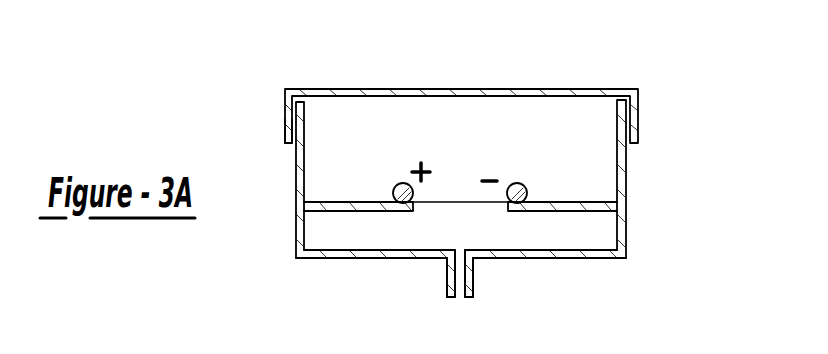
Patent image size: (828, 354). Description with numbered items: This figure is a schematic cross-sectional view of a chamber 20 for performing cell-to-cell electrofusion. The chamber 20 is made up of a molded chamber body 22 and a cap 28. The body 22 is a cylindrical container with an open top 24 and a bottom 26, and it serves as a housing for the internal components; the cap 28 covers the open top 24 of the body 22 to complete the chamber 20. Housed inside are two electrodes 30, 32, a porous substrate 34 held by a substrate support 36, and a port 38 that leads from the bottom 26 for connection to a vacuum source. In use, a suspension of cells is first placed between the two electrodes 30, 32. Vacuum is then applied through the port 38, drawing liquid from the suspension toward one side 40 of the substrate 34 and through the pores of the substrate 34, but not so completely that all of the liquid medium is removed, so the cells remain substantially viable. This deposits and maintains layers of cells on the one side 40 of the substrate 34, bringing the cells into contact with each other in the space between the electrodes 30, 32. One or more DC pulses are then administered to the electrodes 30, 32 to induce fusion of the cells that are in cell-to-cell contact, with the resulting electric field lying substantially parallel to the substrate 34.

The chamber 20 is at (319, 64).
The molded chamber body 22 is at (625, 223).
The open top 24 is at (590, 117).
The bottom 26 is at (582, 258).
The cap 28 is at (285, 115).
The electrode 30 is at (402, 185).
The electrode 32 is at (520, 185).
The porous substrate 34 is at (338, 204).
The substrate support 36 is at (338, 212).
The port 38 is at (475, 278).
The one side of the substrate 40 is at (460, 149).